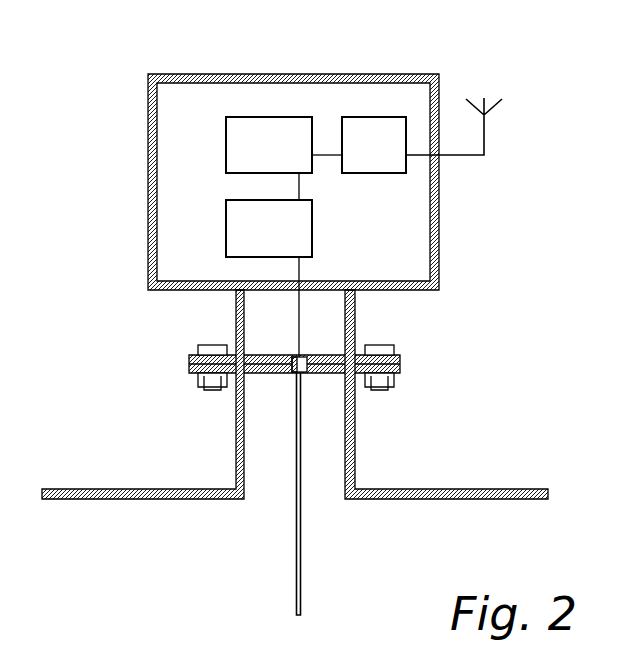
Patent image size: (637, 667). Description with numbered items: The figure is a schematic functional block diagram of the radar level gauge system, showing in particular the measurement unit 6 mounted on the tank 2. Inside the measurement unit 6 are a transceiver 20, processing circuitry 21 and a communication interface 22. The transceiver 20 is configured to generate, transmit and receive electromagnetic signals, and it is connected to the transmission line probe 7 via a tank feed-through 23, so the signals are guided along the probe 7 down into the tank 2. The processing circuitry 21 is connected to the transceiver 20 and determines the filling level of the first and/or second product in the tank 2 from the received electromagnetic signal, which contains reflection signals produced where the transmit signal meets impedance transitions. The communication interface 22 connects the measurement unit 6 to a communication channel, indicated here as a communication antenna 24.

The tank 2 is at (473, 489).
The measurement unit 6 is at (210, 74).
The transmission line probe 7 is at (301, 538).
The transceiver 20 is at (313, 227).
The processing circuitry 21 is at (226, 147).
The communication interface 22 is at (375, 117).
The tank feed-through 23 is at (293, 361).
The communication antenna 24 is at (484, 130).